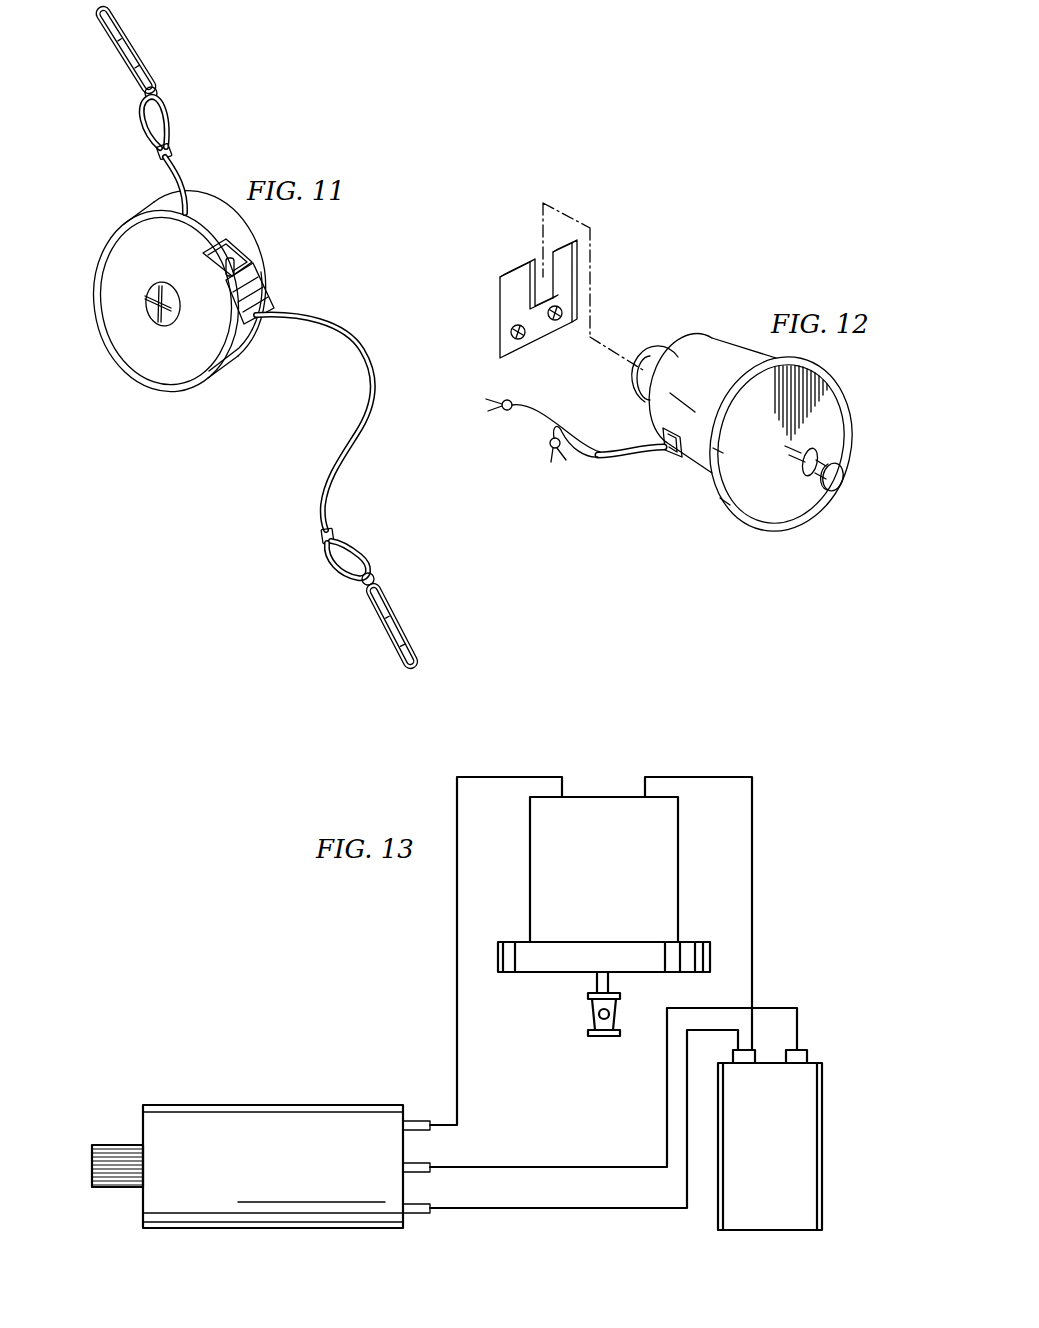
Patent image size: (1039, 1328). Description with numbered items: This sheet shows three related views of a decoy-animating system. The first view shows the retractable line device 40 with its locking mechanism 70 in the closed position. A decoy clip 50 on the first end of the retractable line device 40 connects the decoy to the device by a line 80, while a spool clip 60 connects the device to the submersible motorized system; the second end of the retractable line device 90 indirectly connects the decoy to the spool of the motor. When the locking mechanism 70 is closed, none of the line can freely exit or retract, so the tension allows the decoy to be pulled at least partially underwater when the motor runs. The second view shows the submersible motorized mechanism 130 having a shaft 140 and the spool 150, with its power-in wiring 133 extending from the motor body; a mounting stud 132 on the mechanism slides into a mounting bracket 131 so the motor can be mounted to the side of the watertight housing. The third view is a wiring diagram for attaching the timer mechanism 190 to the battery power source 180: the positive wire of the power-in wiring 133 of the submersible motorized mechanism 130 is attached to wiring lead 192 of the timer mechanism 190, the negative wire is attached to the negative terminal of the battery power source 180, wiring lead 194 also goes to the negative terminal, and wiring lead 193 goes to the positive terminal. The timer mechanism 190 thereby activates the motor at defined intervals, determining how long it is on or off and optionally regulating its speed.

In FIG. 11, the retractable line device 40 is at (133, 204).
In FIG. 11, the decoy clip 50 is at (143, 57).
In FIG. 11, the spool clip 60 is at (377, 622).
In FIG. 11, the locking mechanism 70 is at (268, 292).
In FIG. 11, the line 80 is at (139, 117).
In FIG. 11, the second end of the retractable line device 90 is at (318, 503).
In FIG. 12, the submersible motorized mechanism 130 is at (730, 517).
In FIG. 13, the submersible motorized mechanism 130 is at (541, 975).
In FIG. 12, the mounting bracket 131 is at (514, 268).
In FIG. 12, the mounting stud 132 is at (664, 353).
In FIG. 12, the power-in wiring of the submersible motorized mechanism 133 is at (622, 474).
In FIG. 12, the shaft 140 is at (789, 450).
In FIG. 12, the spool 150 is at (843, 473).
In FIG. 13, the battery power source 180 is at (823, 1186).
In FIG. 13, the timer mechanism 190 is at (228, 1105).
In FIG. 13, the wiring lead 192 is at (417, 1120).
In FIG. 13, the wiring lead 193 is at (427, 1160).
In FIG. 13, the wiring lead 194 is at (417, 1215).